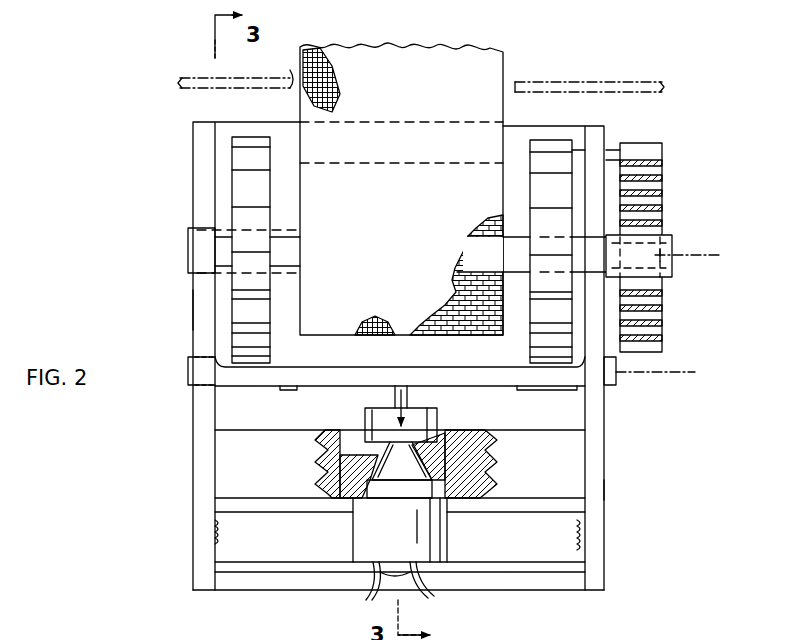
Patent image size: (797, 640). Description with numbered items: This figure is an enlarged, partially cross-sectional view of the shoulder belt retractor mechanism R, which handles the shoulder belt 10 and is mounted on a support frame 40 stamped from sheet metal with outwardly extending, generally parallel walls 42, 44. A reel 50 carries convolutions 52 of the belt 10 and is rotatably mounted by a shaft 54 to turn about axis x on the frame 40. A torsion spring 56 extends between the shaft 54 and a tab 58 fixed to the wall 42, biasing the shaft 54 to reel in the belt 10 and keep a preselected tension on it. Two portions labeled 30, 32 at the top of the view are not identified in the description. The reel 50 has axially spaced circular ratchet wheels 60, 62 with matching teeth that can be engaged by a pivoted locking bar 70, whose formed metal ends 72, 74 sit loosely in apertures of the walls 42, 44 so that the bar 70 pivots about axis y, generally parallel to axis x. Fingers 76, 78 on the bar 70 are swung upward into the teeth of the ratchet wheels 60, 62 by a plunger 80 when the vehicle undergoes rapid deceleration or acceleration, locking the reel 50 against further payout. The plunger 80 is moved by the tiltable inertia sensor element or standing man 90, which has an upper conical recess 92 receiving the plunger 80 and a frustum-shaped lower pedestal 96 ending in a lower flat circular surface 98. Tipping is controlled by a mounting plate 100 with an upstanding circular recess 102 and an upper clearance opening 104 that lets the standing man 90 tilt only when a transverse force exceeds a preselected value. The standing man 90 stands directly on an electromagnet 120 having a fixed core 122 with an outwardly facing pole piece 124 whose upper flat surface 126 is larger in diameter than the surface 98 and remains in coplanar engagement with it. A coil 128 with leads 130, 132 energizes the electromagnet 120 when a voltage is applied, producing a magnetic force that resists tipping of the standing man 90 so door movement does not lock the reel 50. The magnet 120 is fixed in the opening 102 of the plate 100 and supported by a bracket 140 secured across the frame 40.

The shoulder belt 10 is at (377, 57).
The belt 30 is at (617, 83).
The belt 32 is at (290, 65).
The support frame 40 is at (607, 487).
The wall 42 is at (600, 452).
The wall 44 is at (205, 302).
The reel 50 is at (342, 322).
The convolutions 52 is at (458, 345).
The shaft 54 is at (192, 242).
The torsion spring 56 is at (663, 182).
The tab 58 is at (610, 147).
The ratchet wheel 60 is at (565, 157).
The ratchet wheel 62 is at (267, 197).
The locking bar 70 is at (297, 386).
The formed metal end 72 is at (610, 383).
The formed metal end 74 is at (193, 383).
The finger 76 is at (543, 393).
The finger 78 is at (233, 390).
The plunger 80 is at (400, 383).
The inertia sensor element 90 is at (380, 457).
The conical recess 92 is at (420, 420).
The pedestal 96 is at (465, 445).
The lower flat circular surface 98 is at (483, 480).
The mounting plate 100 is at (520, 493).
The circular recess 102 is at (327, 477).
The clearance opening 104 is at (352, 433).
The electromagnet 120 is at (449, 530).
The core 122 is at (413, 595).
The pole piece 124 is at (390, 493).
The upper flat surface 126 is at (363, 500).
The coil 128 is at (447, 548).
The lead 130 is at (373, 577).
The lead 132 is at (432, 588).
The bracket 140 is at (550, 567).
The shoulder belt retractor mechanism R is at (222, 184).
The axis x is at (700, 252).
The pivotal axis y is at (680, 372).